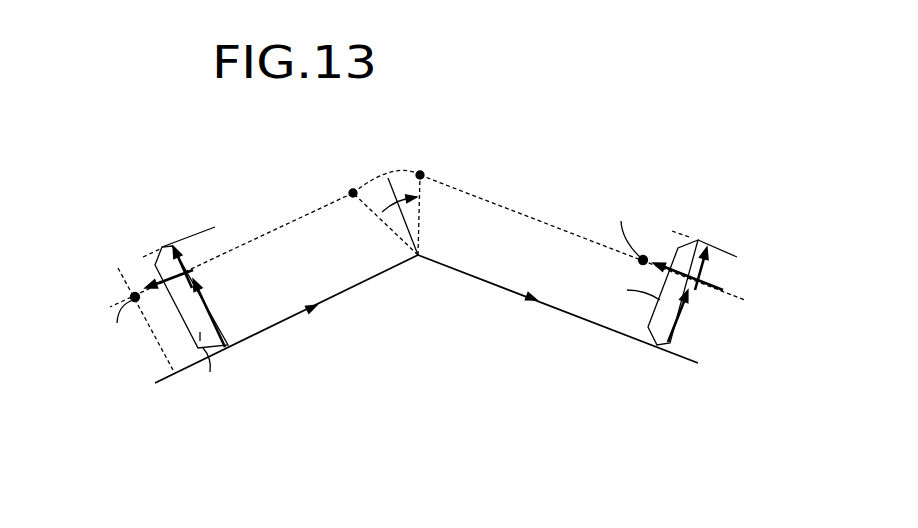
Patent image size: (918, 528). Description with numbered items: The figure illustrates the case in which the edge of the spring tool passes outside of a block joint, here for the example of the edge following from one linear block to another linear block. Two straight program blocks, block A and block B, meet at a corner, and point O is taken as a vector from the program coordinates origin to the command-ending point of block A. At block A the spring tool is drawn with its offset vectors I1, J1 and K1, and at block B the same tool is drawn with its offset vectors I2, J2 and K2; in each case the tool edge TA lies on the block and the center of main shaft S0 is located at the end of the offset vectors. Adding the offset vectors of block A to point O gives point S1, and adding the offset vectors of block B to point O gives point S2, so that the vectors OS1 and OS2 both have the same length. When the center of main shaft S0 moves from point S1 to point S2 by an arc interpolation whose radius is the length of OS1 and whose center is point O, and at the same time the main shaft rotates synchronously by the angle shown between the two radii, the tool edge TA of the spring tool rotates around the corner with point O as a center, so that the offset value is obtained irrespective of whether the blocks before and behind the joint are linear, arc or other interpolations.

The point O is at (426, 319).
The block A is at (307, 327).
The block B is at (525, 316).
The center of main shaft S0 is at (421, 272).
The point S1 is at (370, 207).
The point S2 is at (414, 198).
The tool edge TA is at (446, 315).
The offset vector K1 is at (150, 263).
The offset vector I1 is at (215, 313).
The offset vector J1 is at (193, 262).
The offset vector K2 is at (680, 260).
The offset vector I2 is at (687, 316).
The offset vector J2 is at (715, 269).